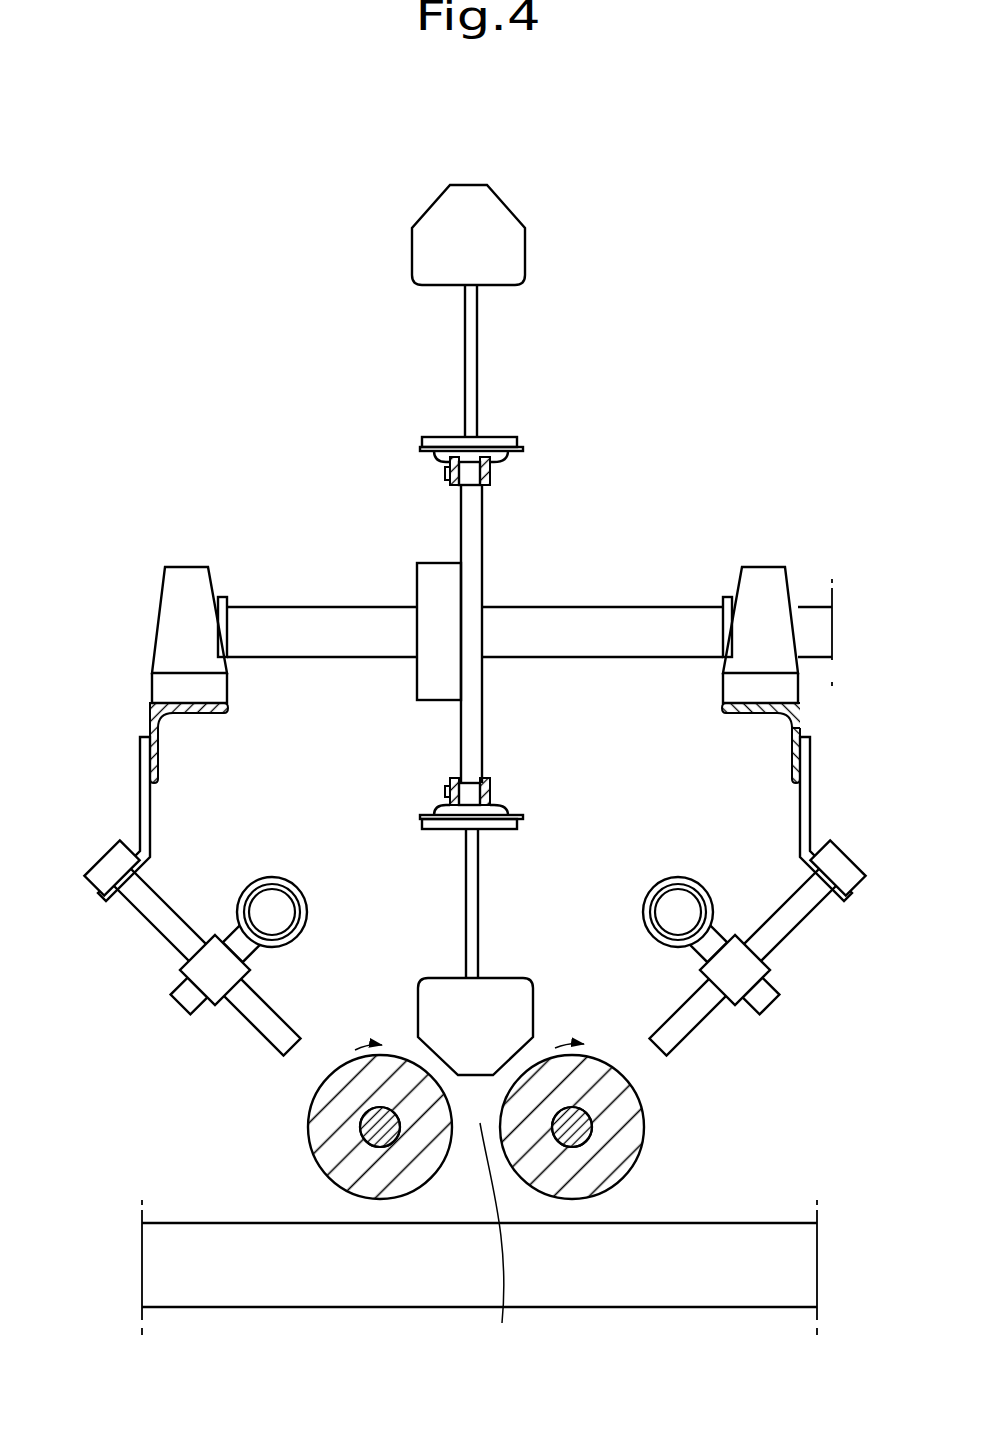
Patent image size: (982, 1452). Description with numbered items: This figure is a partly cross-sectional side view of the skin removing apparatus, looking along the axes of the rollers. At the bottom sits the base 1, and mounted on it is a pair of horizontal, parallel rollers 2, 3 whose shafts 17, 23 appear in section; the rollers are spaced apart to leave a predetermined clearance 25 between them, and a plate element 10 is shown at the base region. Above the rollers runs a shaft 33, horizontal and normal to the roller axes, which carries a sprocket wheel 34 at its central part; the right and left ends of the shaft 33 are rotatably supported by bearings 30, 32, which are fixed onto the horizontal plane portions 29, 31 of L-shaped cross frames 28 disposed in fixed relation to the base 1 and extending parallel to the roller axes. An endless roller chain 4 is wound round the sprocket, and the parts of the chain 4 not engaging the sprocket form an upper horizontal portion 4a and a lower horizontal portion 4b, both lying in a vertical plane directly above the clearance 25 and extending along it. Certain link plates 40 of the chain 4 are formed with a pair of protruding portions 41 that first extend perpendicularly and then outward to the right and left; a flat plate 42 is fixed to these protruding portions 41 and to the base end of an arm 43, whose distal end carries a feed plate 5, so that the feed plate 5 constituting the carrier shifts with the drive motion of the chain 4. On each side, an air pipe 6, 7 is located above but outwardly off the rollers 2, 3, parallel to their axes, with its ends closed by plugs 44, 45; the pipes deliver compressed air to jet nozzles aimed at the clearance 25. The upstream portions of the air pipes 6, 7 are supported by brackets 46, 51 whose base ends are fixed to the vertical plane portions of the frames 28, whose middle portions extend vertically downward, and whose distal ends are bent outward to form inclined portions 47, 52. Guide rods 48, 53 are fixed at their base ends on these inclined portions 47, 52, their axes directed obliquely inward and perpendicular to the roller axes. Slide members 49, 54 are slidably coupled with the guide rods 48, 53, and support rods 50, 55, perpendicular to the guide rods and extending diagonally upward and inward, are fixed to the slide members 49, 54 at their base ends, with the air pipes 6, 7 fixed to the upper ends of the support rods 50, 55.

The base 1 is at (730, 1214).
The roller 2 is at (637, 1102).
The roller 3 is at (333, 1125).
The roller chain 4 is at (441, 494).
The upper horizontal portion 4a is at (490, 482).
The lower horizontal portion 4b is at (493, 793).
The feed plate 5 is at (475, 232).
The air pipe 6 is at (667, 878).
The air pipe 7 is at (265, 878).
The base plate 10 is at (380, 1272).
The shaft 17 is at (590, 1140).
The shaft 23 is at (378, 1130).
The clearance 25 is at (493, 1244).
The L-shaped cross frame 28 is at (803, 727).
The horizontal plane portion 29 is at (760, 703).
The bearing 30 is at (765, 605).
The horizontal plane portion 31 is at (185, 703).
The bearing 32 is at (182, 605).
The shaft 33 is at (622, 632).
The sprocket wheel 34 is at (470, 542).
The link plate 40 is at (445, 482).
The protruding portion 41 is at (430, 458).
The flat plate 42 is at (447, 438).
The arm 43 is at (468, 353).
The plug 44 is at (690, 880).
The plug 45 is at (300, 892).
The bracket 46 is at (811, 763).
The inclined portion 47 is at (850, 862).
The guide rod 48 is at (783, 925).
The slide member 49 is at (738, 990).
The support rod 50 is at (712, 937).
The bracket 51 is at (137, 757).
The inclined portion 52 is at (115, 862).
The guide rod 53 is at (167, 923).
The slide member 54 is at (220, 985).
The support rod 55 is at (245, 940).